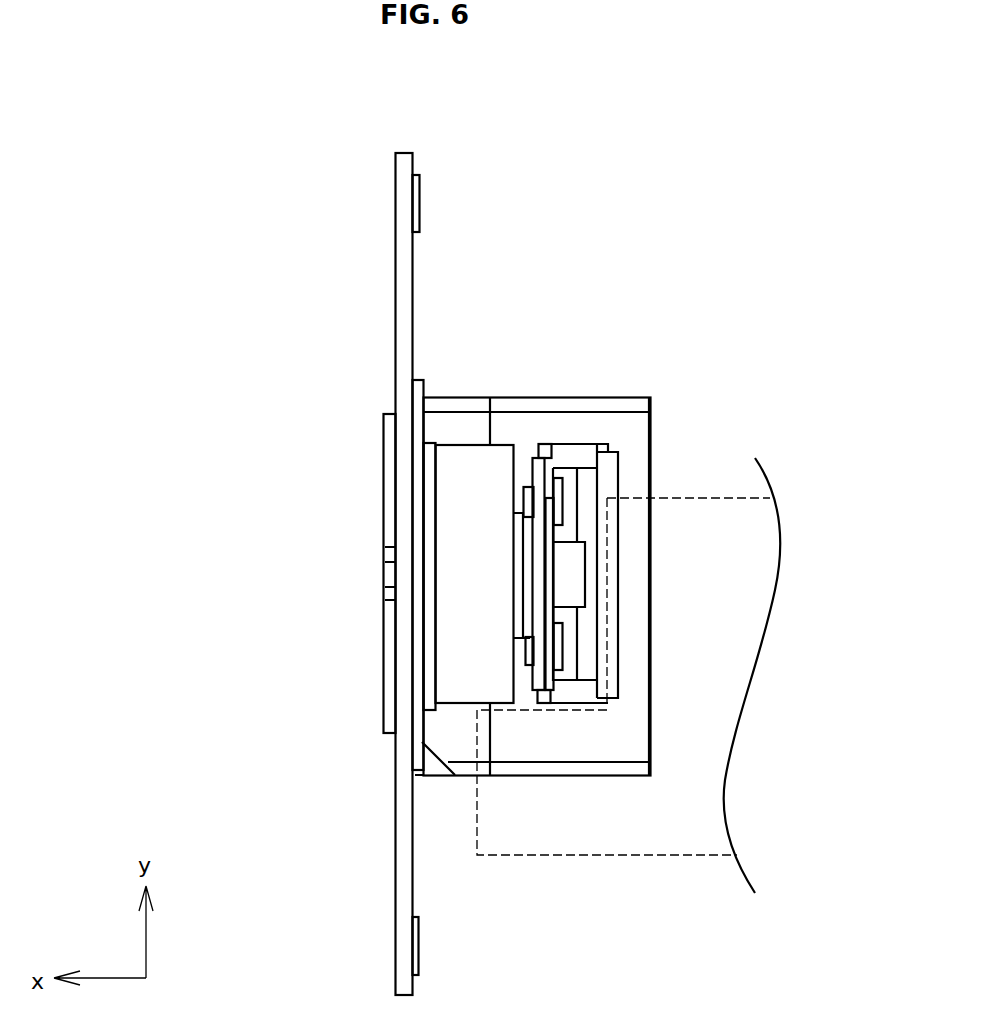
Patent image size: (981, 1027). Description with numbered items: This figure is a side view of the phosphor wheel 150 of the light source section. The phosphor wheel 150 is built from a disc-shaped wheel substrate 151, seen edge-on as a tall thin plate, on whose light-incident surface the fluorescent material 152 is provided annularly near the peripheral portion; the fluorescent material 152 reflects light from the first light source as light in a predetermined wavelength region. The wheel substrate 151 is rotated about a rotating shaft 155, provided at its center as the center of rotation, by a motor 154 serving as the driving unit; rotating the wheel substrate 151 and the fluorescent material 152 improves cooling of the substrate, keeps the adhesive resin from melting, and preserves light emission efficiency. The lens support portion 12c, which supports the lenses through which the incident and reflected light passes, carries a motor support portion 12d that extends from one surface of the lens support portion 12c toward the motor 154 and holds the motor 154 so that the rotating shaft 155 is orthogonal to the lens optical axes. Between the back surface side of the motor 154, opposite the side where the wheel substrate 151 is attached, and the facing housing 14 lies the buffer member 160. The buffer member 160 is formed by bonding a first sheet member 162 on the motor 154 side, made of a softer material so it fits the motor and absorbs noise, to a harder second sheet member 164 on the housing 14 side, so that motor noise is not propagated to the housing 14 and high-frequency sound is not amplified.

The phosphor wheel 150 is at (722, 133).
The wheel substrate 151 is at (405, 152).
The fluorescent material 152 is at (420, 200).
The motor 154 is at (447, 477).
The rotating shaft 155 is at (520, 630).
The buffer member 160 is at (793, 430).
The first sheet member 162 is at (607, 487).
The second sheet member 164 is at (602, 458).
The lens support portion 12c is at (513, 397).
The motor support portion 12d is at (577, 456).
The housing 14 is at (612, 855).